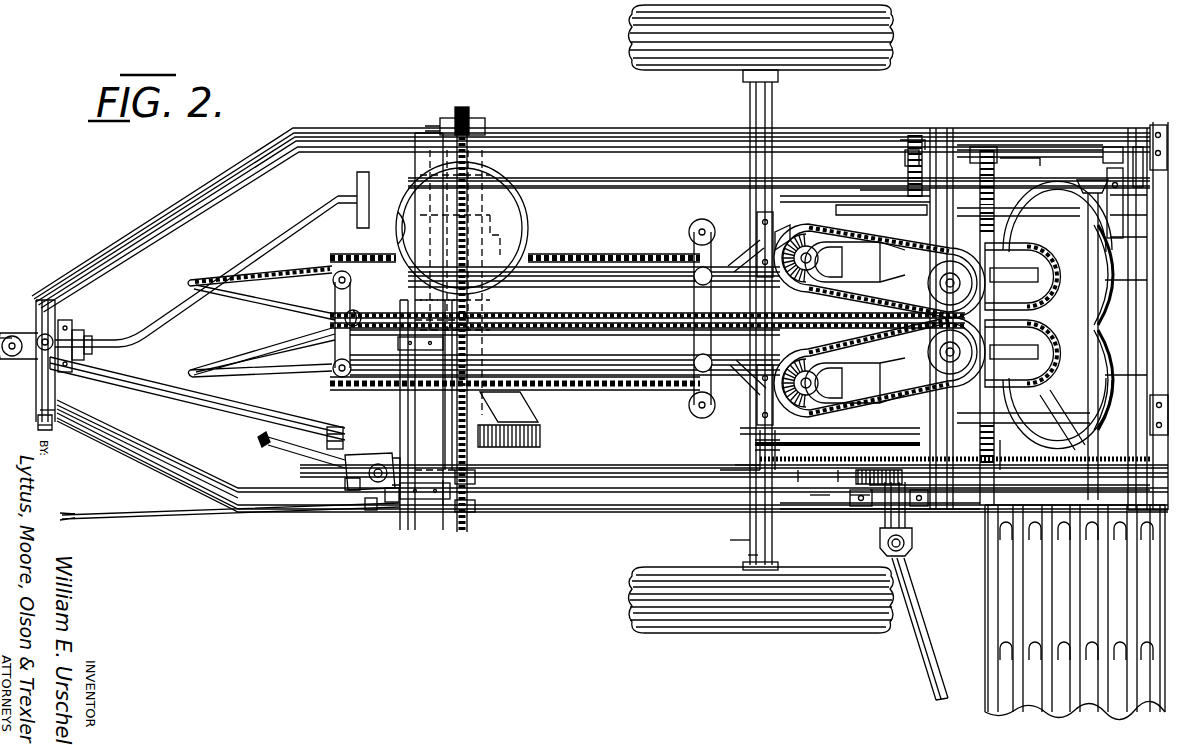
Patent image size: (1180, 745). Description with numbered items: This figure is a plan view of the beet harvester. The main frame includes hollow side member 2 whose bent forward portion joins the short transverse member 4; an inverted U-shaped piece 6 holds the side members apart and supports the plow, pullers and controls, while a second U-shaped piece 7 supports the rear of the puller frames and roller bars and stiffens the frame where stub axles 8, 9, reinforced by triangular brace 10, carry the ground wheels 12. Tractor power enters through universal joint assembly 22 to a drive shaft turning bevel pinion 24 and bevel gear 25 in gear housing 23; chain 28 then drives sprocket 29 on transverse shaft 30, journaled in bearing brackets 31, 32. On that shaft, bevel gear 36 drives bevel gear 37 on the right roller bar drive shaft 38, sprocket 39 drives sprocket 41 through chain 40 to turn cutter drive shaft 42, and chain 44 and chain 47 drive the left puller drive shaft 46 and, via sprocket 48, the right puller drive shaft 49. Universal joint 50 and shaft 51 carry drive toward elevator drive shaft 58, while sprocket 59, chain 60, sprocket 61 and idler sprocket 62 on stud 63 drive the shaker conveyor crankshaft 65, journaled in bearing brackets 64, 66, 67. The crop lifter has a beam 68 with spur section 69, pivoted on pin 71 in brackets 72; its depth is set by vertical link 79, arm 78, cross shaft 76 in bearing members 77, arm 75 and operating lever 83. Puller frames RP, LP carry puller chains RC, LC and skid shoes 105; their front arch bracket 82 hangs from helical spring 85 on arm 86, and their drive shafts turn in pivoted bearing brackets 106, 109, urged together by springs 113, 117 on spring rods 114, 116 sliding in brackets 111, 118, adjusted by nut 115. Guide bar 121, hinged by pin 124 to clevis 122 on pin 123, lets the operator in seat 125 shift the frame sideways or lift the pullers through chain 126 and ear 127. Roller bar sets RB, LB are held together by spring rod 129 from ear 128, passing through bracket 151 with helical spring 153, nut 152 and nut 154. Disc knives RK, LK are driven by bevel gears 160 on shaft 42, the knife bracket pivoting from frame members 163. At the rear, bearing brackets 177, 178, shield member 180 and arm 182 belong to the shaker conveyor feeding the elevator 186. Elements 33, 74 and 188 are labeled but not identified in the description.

The side frame member 2 is at (295, 134).
The transverse member 4 is at (38, 308).
The inverted U-shaped piece 6 is at (448, 520).
The inverted U-shaped piece 7 is at (757, 160).
The stub axle 8 is at (757, 554).
The stub axle 9 is at (748, 88).
The triangular brace 10 is at (735, 542).
The ground wheel 12 is at (630, 31).
The universal joint assembly 22 is at (268, 447).
The gear housing 23 is at (840, 462).
The bevel pinion 24 is at (855, 500).
The bevel gear 25 is at (870, 482).
The chain 28 is at (798, 462).
The sprocket 29 is at (722, 478).
The transverse shaft 30 is at (770, 295).
The bearing bracket 31 is at (760, 404).
The bearing bracket 32 is at (760, 222).
The bevel gear 33 is at (800, 405).
The bevel gear 36 is at (770, 250).
The bevel gear 37 is at (825, 240).
The right roller bar drive shaft 38 is at (768, 247).
The sprocket 39 is at (740, 470).
The chain 40 is at (815, 500).
The sprocket 41 is at (1000, 388).
The cutter drive shaft 42 is at (1130, 242).
The chain 44 is at (770, 338).
The left puller drive shaft 46 is at (879, 367).
The chain 47 is at (826, 228).
The sprocket 48 is at (1070, 182).
The right puller drive shaft 49 is at (1002, 262).
The universal joint 50 is at (915, 562).
The shaft 51 is at (920, 656).
The elevator drive shaft 58 is at (466, 520).
The sprocket 59 is at (472, 482).
The chain 60 is at (470, 456).
The sprocket 61 is at (490, 152).
The idler sprocket 62 is at (464, 118).
The stud 63 is at (480, 124).
The bearing bracket 64 is at (420, 133).
The shaker conveyor crankshaft 65 is at (553, 178).
The bearing bracket 66 is at (975, 140).
The bearing bracket 67 is at (1130, 202).
The beam 68 is at (170, 468).
The spur section 69 is at (522, 414).
The pin 71 is at (58, 424).
The brackets 72 is at (60, 412).
The bracket 74 is at (370, 508).
The arm 75 is at (418, 518).
The cross shaft 76 is at (402, 411).
The bearing members 77 is at (443, 510).
The arm 78 is at (352, 474).
The vertical link 79 is at (330, 450).
The front arch bracket 82 is at (318, 316).
The operating lever 83 is at (106, 516).
The helical spring 85 is at (330, 346).
The arm 86 is at (394, 334).
The skid shoes 105 is at (238, 356).
The bearing bracket 106 is at (1064, 409).
The bearing bracket 109 is at (1057, 225).
The bracket 111 is at (905, 482).
The compression spring 113 is at (975, 470).
The spring rod 114 is at (995, 470).
The nut 115 is at (1030, 425).
The spring rod 116 is at (1012, 145).
The spring 117 is at (1000, 190).
The bracket 118 is at (962, 140).
The guide bar 121 is at (172, 305).
The clevis 122 is at (8, 335).
The pin 123 is at (72, 322).
The pin 124 is at (90, 322).
The seat 125 is at (402, 162).
The chain 126 is at (228, 268).
The ear 127 is at (326, 272).
The ear 128 is at (879, 271).
The spring rod 129 is at (917, 135).
The bracket 151 is at (945, 140).
The nut 152 is at (912, 182).
The helical spring 153 is at (905, 170).
The nut 154 is at (907, 150).
The bevel gears 160 is at (1132, 377).
The frame members 163 is at (768, 440).
The bearing bracket 177 is at (1148, 125).
The bearing bracket 178 is at (1025, 145).
The rear shield member 180 is at (1132, 284).
The arm 182 is at (1062, 435).
The elevator 186 is at (998, 726).
The beam 188 is at (1135, 223).
The right puller chain RC is at (563, 252).
The right puller frame RP is at (598, 256).
The left puller chain LC is at (593, 399).
The left puller frame LP is at (622, 392).
The right roller bar set RB is at (1123, 275).
The left roller bar set LB is at (1122, 369).
The right disc knife RK is at (1096, 178).
The left disc knife LK is at (1010, 472).